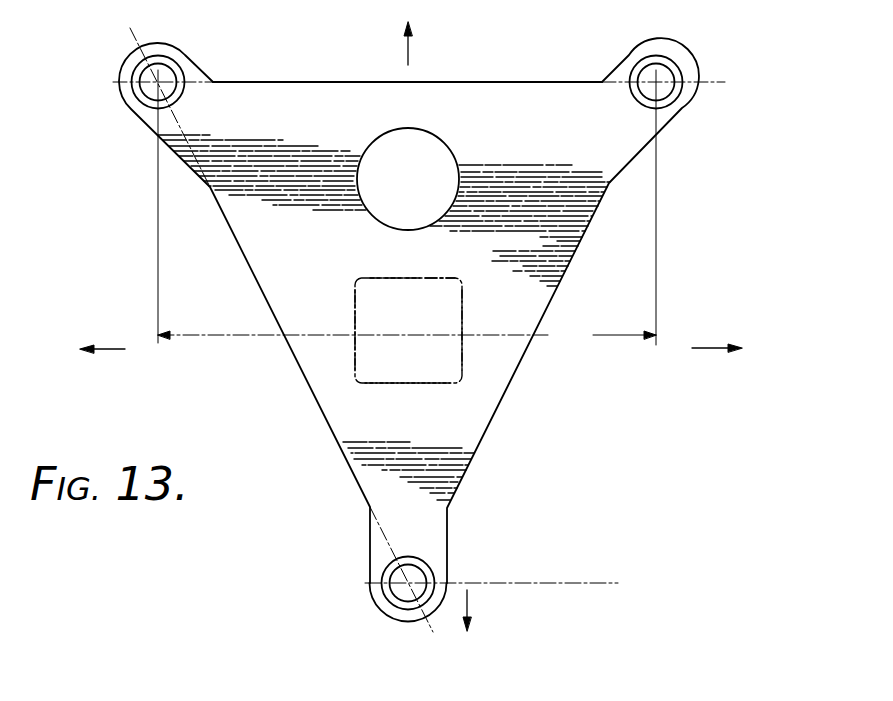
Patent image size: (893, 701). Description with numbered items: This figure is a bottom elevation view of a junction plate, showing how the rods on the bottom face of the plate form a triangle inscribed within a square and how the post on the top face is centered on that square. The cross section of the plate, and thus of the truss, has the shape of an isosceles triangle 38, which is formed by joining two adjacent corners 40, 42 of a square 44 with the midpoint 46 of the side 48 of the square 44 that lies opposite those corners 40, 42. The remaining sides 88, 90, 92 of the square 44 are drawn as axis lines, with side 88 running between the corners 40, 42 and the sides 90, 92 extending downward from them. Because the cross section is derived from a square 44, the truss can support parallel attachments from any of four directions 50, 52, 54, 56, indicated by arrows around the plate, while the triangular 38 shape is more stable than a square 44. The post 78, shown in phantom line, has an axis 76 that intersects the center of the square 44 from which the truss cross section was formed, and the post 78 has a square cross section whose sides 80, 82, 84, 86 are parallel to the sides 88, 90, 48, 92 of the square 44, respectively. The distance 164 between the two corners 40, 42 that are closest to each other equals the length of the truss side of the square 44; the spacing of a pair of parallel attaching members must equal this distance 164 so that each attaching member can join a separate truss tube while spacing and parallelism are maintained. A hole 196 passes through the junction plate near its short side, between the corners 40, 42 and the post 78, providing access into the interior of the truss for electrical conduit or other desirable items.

The isosceles triangle 38 is at (327, 418).
The corner 40 is at (158, 82).
The corner 42 is at (656, 82).
The midpoint 46 is at (408, 583).
The square 44 is at (158, 274).
The side of the square 92 is at (655, 270).
The side of the square 48 is at (603, 583).
The direction 50 is at (692, 348).
The direction 52 is at (467, 607).
The direction 54 is at (125, 349).
The direction 56 is at (408, 52).
The axis of the post 76 is at (407, 332).
The post 78 is at (438, 282).
The side of the post 80 is at (398, 278).
The side of the post 82 is at (360, 310).
The side of the post 84 is at (393, 385).
The side of the post 86 is at (457, 312).
The side of the square 88 is at (327, 82).
The side of the square 90 is at (160, 318).
The distance 164 is at (407, 336).
The hole 196 is at (447, 152).